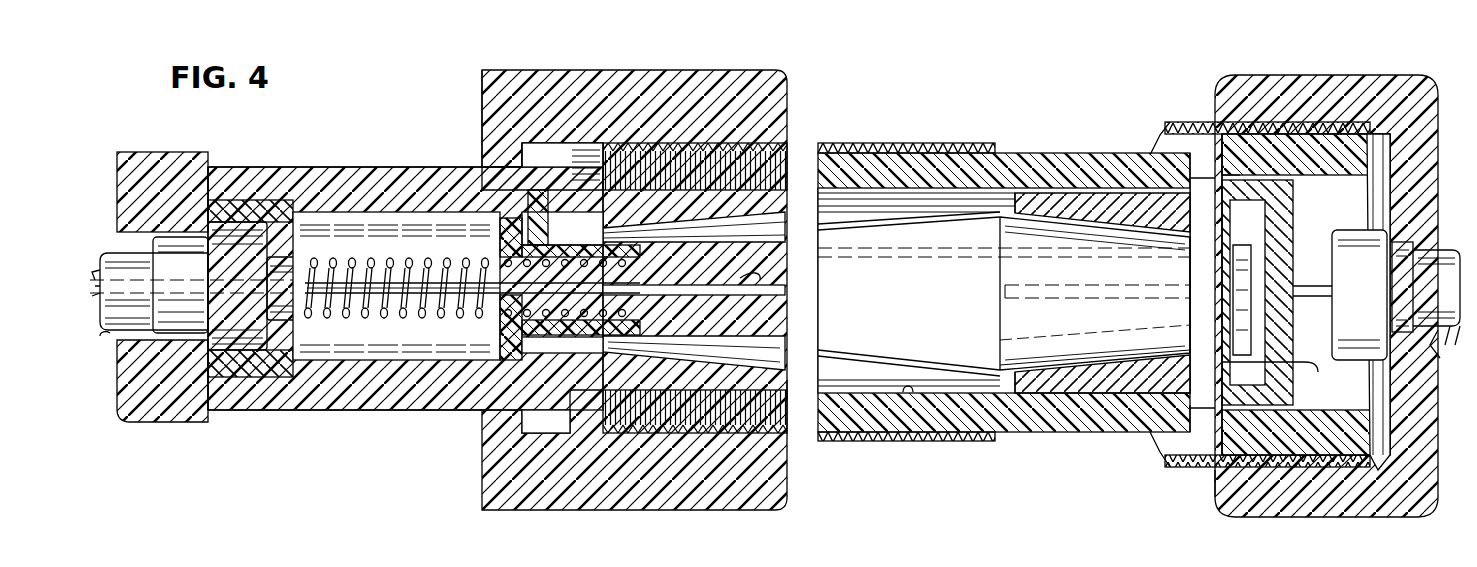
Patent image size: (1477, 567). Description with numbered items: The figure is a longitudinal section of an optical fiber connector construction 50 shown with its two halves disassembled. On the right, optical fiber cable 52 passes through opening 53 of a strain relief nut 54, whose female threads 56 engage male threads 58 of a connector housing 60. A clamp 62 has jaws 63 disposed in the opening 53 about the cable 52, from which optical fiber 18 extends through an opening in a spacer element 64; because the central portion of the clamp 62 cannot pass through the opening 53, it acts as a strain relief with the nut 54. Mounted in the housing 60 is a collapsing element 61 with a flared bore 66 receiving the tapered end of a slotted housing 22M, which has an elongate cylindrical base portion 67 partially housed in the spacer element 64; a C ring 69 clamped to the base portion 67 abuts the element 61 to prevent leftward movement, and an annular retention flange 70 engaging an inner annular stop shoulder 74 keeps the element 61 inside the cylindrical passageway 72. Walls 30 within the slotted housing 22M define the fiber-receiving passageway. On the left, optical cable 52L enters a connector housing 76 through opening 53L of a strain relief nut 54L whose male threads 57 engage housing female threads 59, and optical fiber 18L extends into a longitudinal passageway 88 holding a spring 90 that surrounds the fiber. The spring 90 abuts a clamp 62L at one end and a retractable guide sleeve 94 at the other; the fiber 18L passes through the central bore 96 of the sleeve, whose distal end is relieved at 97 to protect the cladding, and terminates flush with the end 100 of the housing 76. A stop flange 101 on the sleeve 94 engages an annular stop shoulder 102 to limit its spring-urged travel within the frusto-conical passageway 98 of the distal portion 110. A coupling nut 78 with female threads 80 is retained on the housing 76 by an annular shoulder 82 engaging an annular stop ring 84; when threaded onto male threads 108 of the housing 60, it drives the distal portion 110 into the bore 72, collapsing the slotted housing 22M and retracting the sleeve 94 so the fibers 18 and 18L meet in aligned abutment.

The optical fiber 18 is at (1022, 290).
The optical fiber 18L is at (358, 290).
The slotted housing 22M is at (1092, 356).
The walls 30 is at (934, 212).
The connector construction 50 is at (1011, 118).
The optical fiber cable 52 is at (1440, 262).
The optical cable 52L is at (112, 263).
The opening 53 is at (1416, 248).
The opening 53L is at (108, 333).
The strain relief nut 54 is at (1362, 517).
The strain relief nut 54L is at (185, 422).
The female threads 56 is at (1216, 510).
The male threads 57 is at (258, 238).
The male threads 58 is at (1210, 470).
The female threads 59 is at (262, 370).
The connector housing 60 is at (1100, 433).
The collapsing element 61 is at (1083, 200).
The clamp 62 is at (1326, 228).
The clamp 62L is at (285, 265).
The jaws 63 is at (1414, 328).
The spacer element 64 is at (1220, 402).
The flared bore 66 is at (1045, 392).
The elongate cylindrical base portion 67 is at (1240, 255).
The C ring 69 is at (1345, 385).
The annular retention flange 70 is at (1218, 182).
The cylindrical passageway 72 is at (914, 400).
The inner annular stop shoulder 74 is at (1198, 183).
The connector housing 76 is at (389, 160).
The coupling nut 78 is at (777, 90).
The female threads 80 is at (662, 160).
The annular shoulder 82 is at (487, 152).
The annular stop ring 84 is at (545, 420).
The longitudinal passageway 88 is at (415, 362).
The spring 90 is at (383, 320).
The retractable guide sleeve 94 is at (494, 238).
The central bore 96 is at (787, 250).
The relieved distal end 97 is at (788, 292).
The frusto-conical passageway 98 is at (756, 357).
The end of housing portion 100 is at (768, 224).
The stop flange 101 is at (487, 352).
The annular stop shoulder 102 is at (530, 221).
The male threads 108 is at (886, 150).
The distal portion 110 is at (789, 392).